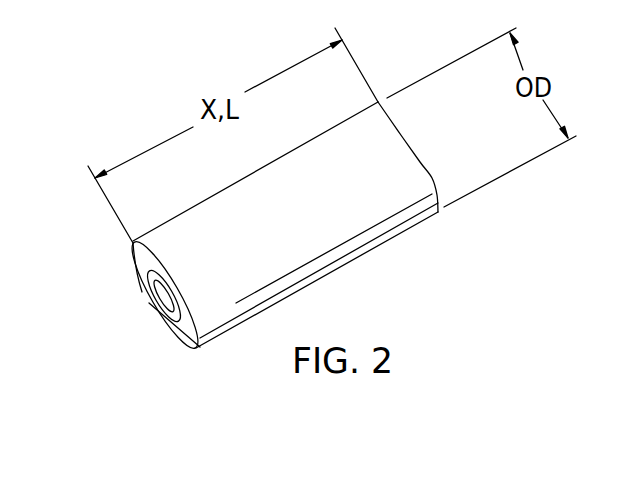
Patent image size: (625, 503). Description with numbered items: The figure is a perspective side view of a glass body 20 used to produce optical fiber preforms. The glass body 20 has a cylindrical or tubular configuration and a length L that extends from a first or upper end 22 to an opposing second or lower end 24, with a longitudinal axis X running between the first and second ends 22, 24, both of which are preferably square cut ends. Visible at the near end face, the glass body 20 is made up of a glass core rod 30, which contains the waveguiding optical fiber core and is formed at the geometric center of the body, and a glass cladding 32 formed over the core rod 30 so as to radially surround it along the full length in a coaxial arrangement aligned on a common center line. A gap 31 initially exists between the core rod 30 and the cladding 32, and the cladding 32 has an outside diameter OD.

The glass body 20 is at (449, 261).
The first end 22 is at (133, 263).
The second end 24 is at (433, 172).
The core rod 30 is at (148, 290).
The gap 31 is at (148, 273).
The cladding 32 is at (190, 328).